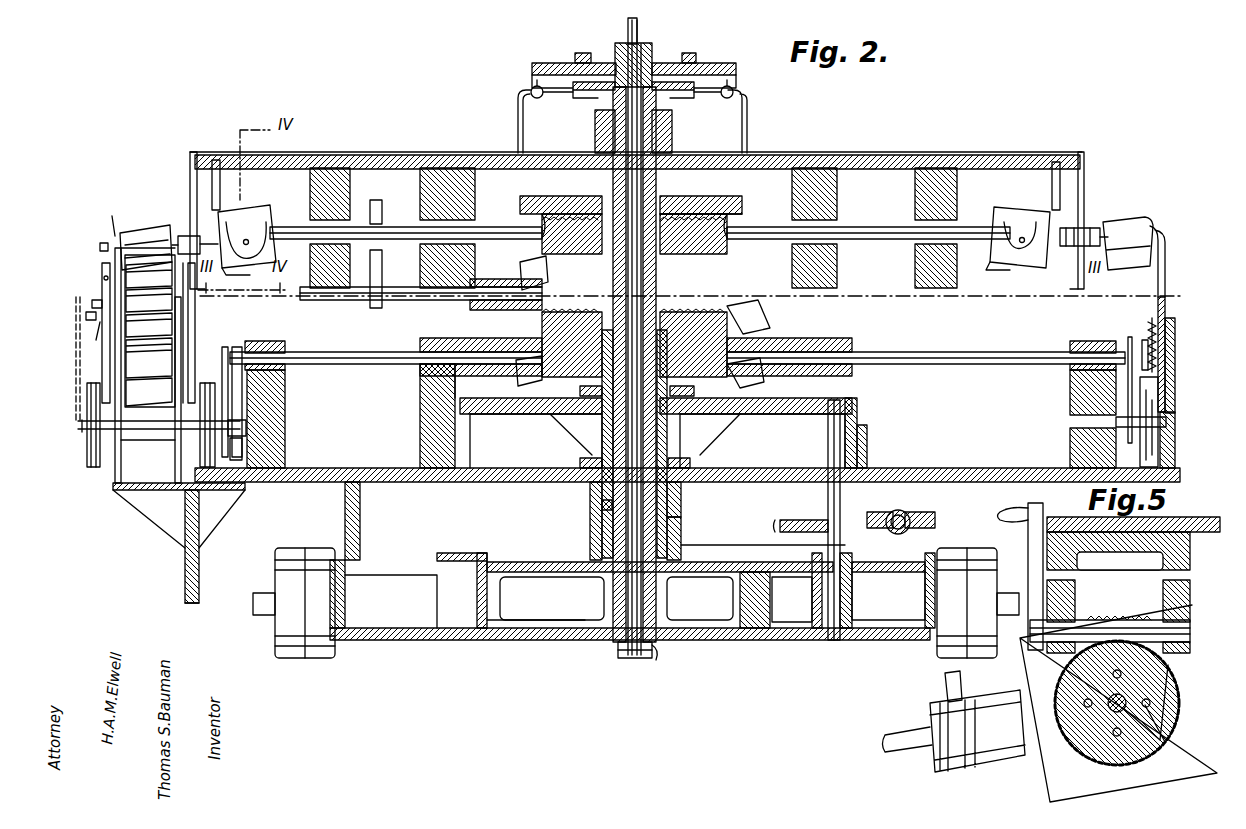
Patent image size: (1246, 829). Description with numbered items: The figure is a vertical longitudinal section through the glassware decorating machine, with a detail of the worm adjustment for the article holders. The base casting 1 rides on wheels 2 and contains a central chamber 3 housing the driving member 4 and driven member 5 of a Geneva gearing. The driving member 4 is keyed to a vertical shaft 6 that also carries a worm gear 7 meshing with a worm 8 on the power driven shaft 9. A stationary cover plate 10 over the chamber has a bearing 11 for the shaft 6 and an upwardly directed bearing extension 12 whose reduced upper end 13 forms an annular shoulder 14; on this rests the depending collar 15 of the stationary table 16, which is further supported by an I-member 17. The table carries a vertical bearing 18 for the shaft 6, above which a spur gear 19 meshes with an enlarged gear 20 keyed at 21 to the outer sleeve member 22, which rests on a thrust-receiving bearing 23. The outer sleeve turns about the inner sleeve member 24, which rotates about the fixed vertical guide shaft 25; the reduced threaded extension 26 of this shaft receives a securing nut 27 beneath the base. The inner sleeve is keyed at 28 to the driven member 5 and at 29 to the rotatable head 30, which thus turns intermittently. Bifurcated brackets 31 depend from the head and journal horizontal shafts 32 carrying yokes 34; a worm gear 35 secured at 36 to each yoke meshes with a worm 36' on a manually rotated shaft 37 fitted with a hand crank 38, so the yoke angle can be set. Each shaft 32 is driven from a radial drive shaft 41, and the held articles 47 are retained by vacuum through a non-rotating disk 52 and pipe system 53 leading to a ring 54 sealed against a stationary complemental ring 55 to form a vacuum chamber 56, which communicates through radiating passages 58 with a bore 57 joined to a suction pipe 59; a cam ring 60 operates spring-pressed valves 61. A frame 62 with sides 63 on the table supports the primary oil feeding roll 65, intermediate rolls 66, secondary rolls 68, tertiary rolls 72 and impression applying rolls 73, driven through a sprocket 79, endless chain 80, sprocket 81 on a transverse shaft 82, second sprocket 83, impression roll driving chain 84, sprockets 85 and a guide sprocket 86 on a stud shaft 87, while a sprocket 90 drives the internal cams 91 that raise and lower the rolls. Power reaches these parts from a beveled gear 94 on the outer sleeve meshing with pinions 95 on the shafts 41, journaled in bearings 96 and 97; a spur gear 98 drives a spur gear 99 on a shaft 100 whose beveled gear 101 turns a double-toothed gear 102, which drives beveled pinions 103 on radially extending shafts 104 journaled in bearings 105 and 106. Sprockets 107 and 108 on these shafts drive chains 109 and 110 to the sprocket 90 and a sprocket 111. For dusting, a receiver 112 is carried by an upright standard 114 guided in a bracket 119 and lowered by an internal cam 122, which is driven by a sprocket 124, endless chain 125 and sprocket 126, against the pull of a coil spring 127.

In FIG. 2, the base casting 1 is at (778, 640).
In FIG. 2, the wheels 2 is at (636, 603).
In FIG. 2, the chamber 3 is at (470, 600).
In FIG. 2, the driving member 4 is at (808, 640).
In FIG. 2, the driven member 5 is at (586, 628).
In FIG. 2, the vertical shaft 6 is at (840, 582).
In FIG. 2, the worm gear 7 is at (784, 520).
In FIG. 2, the worm 8 is at (892, 516).
In FIG. 2, the power driven shaft 9 is at (906, 532).
In FIG. 2, the cover plate 10 is at (724, 556).
In FIG. 2, the bearing 11 is at (828, 543).
In FIG. 2, the bearing extension 12 is at (590, 529).
In FIG. 2, the reduced upper end 13 is at (681, 499).
In FIG. 2, the annular shoulder 14 is at (681, 523).
In FIG. 2, the depending collar 15 is at (600, 503).
In FIG. 2, the stationary table 16 is at (540, 470).
In FIG. 2, the I-member 17 is at (360, 512).
In FIG. 2, the vertical bearing 18 is at (867, 446).
In FIG. 2, the spur gear 19 is at (857, 408).
In FIG. 2, the enlarged gear 20 is at (740, 414).
In FIG. 2, the key 21 is at (678, 444).
In FIG. 2, the outer sleeve member 22 is at (684, 394).
In FIG. 2, the thrust-receiving bearing 23 is at (690, 464).
In FIG. 2, the inner sleeve member 24 is at (667, 540).
In FIG. 2, the fixed vertical guide shaft 25 is at (602, 594).
In FIG. 2, the reduced threaded extension 26 is at (658, 652).
In FIG. 2, the securing nut 27 is at (628, 660).
In FIG. 2, the key 28 is at (668, 600).
In FIG. 2, the key 29 is at (598, 134).
In FIG. 2, the rotatable head 30 is at (880, 156).
In FIG. 2, the bifurcated brackets 31 is at (268, 186).
In FIG. 2, the horizontal shaft 32 is at (246, 238).
In FIG. 5, the horizontal shaft 32 is at (1110, 712).
In FIG. 2, the yoke 34 is at (266, 232).
In FIG. 5, the yoke 34 is at (1048, 781).
In FIG. 2, the worm gear 35 is at (242, 289).
In FIG. 5, the worm gear 35 is at (1170, 680).
In FIG. 5, the bolts 36 is at (1122, 703).
In FIG. 5, the worm 36' is at (1133, 585).
In FIG. 5, the manually rotated shaft 37 is at (1190, 624).
In FIG. 5, the hand crank 38 is at (1030, 532).
In FIG. 2, the drive shaft 41 is at (392, 240).
In FIG. 2, the article 47 is at (152, 236).
In FIG. 5, the non-rotating disk 52 is at (930, 716).
In FIG. 2, the pipe system 53 is at (518, 118).
In FIG. 5, the pipe system 53 is at (945, 676).
In FIG. 2, the ring 54 is at (592, 90).
In FIG. 2, the stationary complemental ring 55 is at (690, 64).
In FIG. 2, the vacuum chamber 56 is at (600, 72).
In FIG. 2, the bore 57 is at (648, 46).
In FIG. 2, the radiating passages 58 is at (665, 70).
In FIG. 2, the pipe 59 is at (628, 20).
In FIG. 2, the cam ring 60 is at (710, 70).
In FIG. 2, the spring-pressed valves 61 is at (531, 90).
In FIG. 2, the frame 62 is at (113, 488).
In FIG. 2, the frame sides 63 is at (175, 448).
In FIG. 2, the primary oil feeding roll 65 is at (149, 392).
In FIG. 2, the intermediate oil-transferring rolls 66 is at (146, 350).
In FIG. 2, the secondary oil transferring rolls 68 is at (149, 325).
In FIG. 2, the tertiary oil transferring rolls 72 is at (149, 300).
In FIG. 2, the impression applying rolls 73 is at (149, 275).
In FIG. 2, the sprocket 79 is at (85, 440).
In FIG. 2, the endless chain 80 is at (78, 380).
In FIG. 2, the sprocket 81 is at (92, 304).
In FIG. 2, the transverse shaft 82 is at (90, 318).
In FIG. 2, the second sprocket 83 is at (95, 336).
In FIG. 2, the impression roll driving chain 84 is at (102, 265).
In FIG. 2, the sprockets 85 is at (102, 280).
In FIG. 2, the guide sprocket 86 is at (100, 244).
In FIG. 2, the stud shaft 87 is at (114, 217).
In FIG. 2, the sprocket 90 is at (233, 452).
In FIG. 2, the internal cams 91 is at (200, 458).
In FIG. 2, the beveled gear 94 is at (700, 203).
In FIG. 2, the pinions 95 is at (548, 248).
In FIG. 2, the bearings 96 is at (476, 192).
In FIG. 2, the bearings 97 is at (350, 188).
In FIG. 2, the spur gear 98 is at (378, 206).
In FIG. 2, the spur gear 99 is at (380, 270).
In FIG. 2, the shaft 100 is at (404, 302).
In FIG. 2, the beveled gear 101 is at (548, 272).
In FIG. 2, the gear 102 is at (760, 318).
In FIG. 2, the beveled pinions 103 is at (530, 378).
In FIG. 2, the radially extending shafts 104 is at (364, 366).
In FIG. 2, the bearings 105 is at (438, 350).
In FIG. 2, the bearings 106 is at (285, 342).
In FIG. 2, the sprocket 107 is at (222, 348).
In FIG. 2, the sprocket 108 is at (238, 348).
In FIG. 2, the chain 109 is at (192, 340).
In FIG. 2, the chain 110 is at (285, 396).
In FIG. 2, the sprocket 111 is at (246, 432).
In FIG. 2, the receiver 112 is at (1135, 218).
In FIG. 2, the upright standard 114 is at (1166, 296).
In FIG. 2, the bracket 119 is at (1176, 324).
In FIG. 2, the internal cam 122 is at (1150, 454).
In FIG. 2, the sprocket 124 is at (1130, 338).
In FIG. 2, the endless chain 125 is at (1128, 384).
In FIG. 2, the sprocket 126 is at (1128, 432).
In FIG. 2, the coil spring 127 is at (1166, 342).